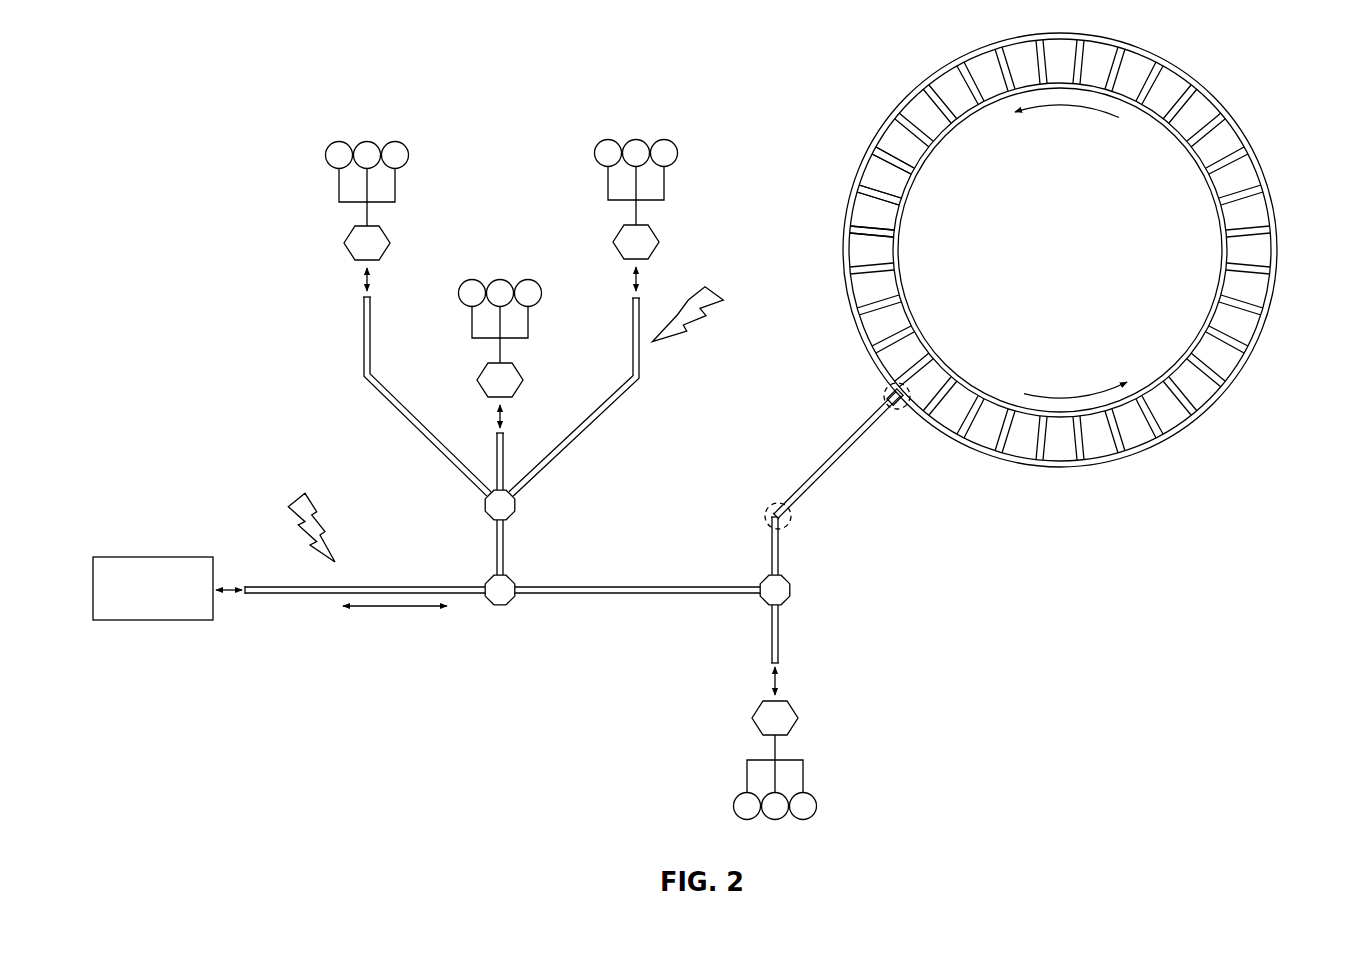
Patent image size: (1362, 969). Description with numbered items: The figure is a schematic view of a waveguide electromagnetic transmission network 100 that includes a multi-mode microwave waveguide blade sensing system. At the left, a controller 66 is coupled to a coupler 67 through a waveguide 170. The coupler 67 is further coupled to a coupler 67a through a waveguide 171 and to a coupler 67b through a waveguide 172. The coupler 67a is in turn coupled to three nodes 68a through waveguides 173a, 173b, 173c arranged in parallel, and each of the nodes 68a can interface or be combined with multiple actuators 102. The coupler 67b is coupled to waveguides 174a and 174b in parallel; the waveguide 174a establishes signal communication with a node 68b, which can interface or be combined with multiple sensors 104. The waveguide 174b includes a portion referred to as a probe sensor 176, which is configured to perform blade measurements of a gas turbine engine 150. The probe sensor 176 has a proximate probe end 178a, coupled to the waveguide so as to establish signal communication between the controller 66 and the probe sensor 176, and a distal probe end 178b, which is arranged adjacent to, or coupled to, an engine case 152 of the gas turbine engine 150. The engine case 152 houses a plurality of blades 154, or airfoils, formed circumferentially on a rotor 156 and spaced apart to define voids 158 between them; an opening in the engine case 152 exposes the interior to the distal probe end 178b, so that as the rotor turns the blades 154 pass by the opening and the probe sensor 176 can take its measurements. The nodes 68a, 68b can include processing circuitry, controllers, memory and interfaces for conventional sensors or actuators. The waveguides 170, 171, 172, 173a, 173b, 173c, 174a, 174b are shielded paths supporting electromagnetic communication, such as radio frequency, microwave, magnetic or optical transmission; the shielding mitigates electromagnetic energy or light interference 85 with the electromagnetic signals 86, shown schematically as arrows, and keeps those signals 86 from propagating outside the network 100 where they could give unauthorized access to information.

The controller 66 is at (140, 604).
The coupler 67 is at (508, 607).
The coupler 67a is at (516, 509).
The coupler 67b is at (791, 590).
The node 68a is at (390, 243).
The node 68b is at (798, 718).
The electromagnetic energy or light interference 85 is at (723, 300).
The electromagnetic signals 86 is at (399, 611).
The waveguide electromagnetic transmission network 100 is at (510, 97).
The actuators 102 is at (409, 151).
The sensors 104 is at (816, 812).
The gas turbine engine 150 is at (1093, 270).
The engine case 152 is at (1093, 477).
The blades 154 is at (986, 419).
The rotor 156 is at (1225, 317).
The voids 158 is at (872, 261).
The waveguide 170 is at (265, 597).
The waveguide 171 is at (497, 546).
The waveguide 172 is at (590, 597).
The waveguide 173a is at (363, 334).
The waveguide 173b is at (496, 467).
The waveguide 173c is at (580, 438).
The waveguide 174a is at (768, 617).
The waveguide 174b is at (770, 547).
The probe sensor 176 is at (816, 489).
The proximate probe end 178a is at (763, 515).
The distal probe end 178b is at (883, 396).